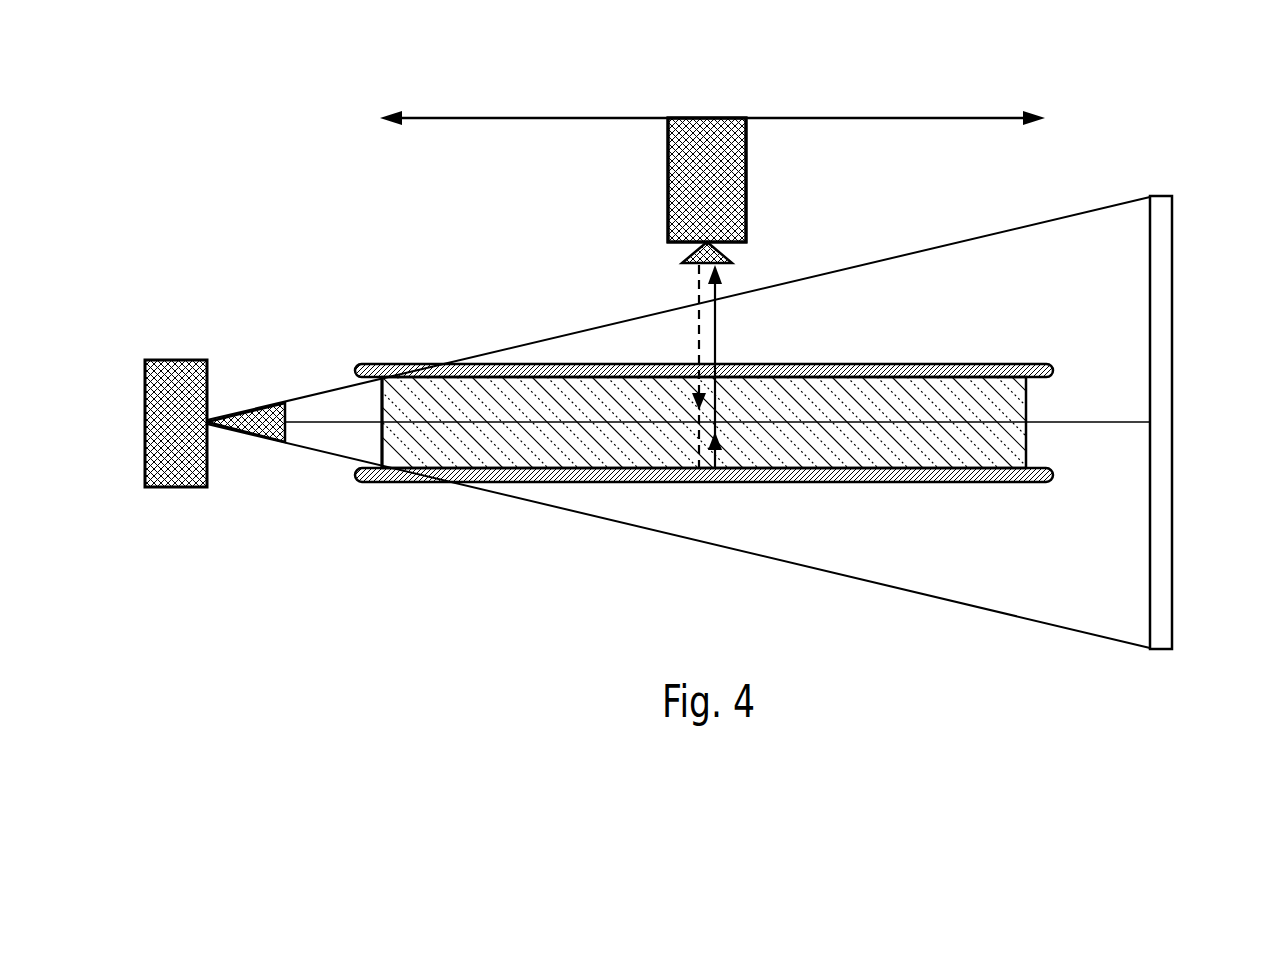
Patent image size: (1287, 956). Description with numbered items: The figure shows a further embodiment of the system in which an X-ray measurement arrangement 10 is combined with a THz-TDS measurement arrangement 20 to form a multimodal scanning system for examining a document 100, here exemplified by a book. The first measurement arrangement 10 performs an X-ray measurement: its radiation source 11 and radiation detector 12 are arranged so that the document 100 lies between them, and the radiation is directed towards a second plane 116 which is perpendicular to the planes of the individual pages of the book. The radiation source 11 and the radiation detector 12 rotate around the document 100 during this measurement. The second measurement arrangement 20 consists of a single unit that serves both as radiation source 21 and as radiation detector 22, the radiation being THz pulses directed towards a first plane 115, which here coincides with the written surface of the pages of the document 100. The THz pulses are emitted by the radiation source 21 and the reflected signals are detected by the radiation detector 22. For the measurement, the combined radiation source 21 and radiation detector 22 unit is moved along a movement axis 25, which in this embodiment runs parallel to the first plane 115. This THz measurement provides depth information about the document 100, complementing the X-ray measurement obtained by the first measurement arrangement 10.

The X-ray measurement arrangement 10 is at (234, 284).
The radiation source 11 is at (176, 488).
The radiation detector 12 is at (1172, 275).
The THz-TDS measurement arrangement 20 is at (598, 108).
The radiation source 21 is at (746, 176).
The radiation detector 22 is at (707, 180).
The movement axis 25 is at (866, 117).
The document 100 is at (1027, 405).
The first plane 115 is at (921, 364).
The second plane 116 is at (382, 405).